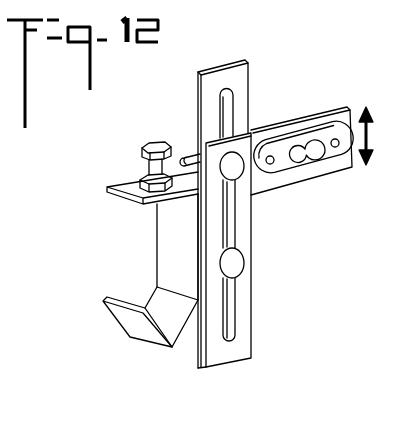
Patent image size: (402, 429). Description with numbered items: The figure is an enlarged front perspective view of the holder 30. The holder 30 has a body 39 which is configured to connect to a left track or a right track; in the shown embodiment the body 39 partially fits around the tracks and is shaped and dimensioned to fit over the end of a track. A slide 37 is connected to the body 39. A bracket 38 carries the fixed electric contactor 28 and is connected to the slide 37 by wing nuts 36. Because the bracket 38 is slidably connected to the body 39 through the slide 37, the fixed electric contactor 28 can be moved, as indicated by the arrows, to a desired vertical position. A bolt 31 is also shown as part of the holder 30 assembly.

The fixed electric contactor 28 is at (312, 158).
The holder 30 is at (283, 75).
The bolt 31 is at (150, 168).
The wing nuts 36 is at (232, 166).
The slide 37 is at (215, 78).
The bracket 38 is at (308, 127).
The body 39 is at (178, 242).